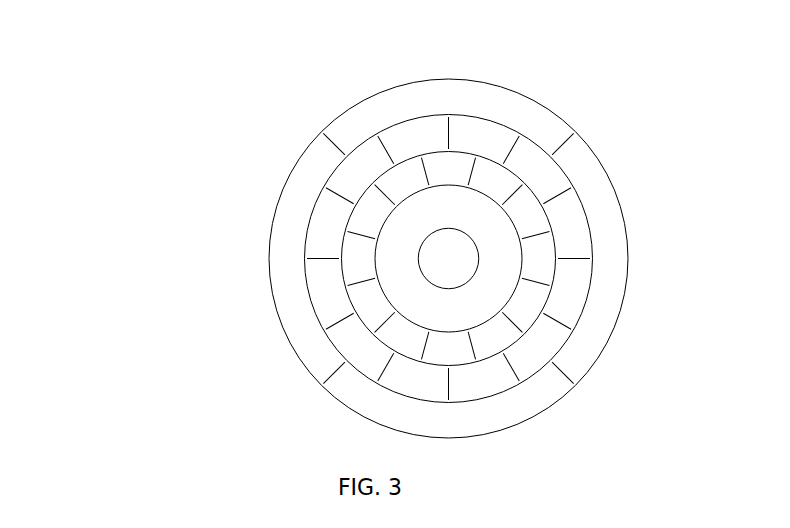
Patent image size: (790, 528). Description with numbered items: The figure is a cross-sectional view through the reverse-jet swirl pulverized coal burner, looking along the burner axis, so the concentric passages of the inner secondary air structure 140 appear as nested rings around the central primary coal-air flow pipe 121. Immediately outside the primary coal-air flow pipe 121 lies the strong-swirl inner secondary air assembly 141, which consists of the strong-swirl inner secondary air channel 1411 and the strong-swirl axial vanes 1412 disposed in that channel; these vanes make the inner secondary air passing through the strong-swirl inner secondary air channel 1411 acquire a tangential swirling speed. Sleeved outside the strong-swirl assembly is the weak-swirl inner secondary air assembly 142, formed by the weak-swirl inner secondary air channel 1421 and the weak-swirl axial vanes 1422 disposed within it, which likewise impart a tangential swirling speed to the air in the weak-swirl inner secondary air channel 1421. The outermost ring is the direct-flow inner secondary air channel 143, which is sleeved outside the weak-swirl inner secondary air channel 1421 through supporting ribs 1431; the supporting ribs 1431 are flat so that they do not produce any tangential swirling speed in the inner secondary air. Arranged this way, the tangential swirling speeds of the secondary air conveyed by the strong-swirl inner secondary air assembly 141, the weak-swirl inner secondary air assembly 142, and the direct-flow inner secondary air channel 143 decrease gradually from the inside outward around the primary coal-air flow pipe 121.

The inner secondary air structure 140 is at (118, 45).
The strong-swirl inner secondary air assembly 141 is at (173, 279).
The strong-swirl inner secondary air channel 1411 is at (358, 270).
The strong-swirl axial vanes 1412 is at (380, 327).
The weak-swirl inner secondary air assembly 142 is at (177, 124).
The weak-swirl inner secondary air channel 1421 is at (360, 177).
The weak-swirl axial vanes 1422 is at (352, 202).
The direct-flow inner secondary air channel 143 is at (377, 115).
The supporting ribs 1431 is at (338, 143).
The primary coal-air flow pipe 121 is at (480, 257).